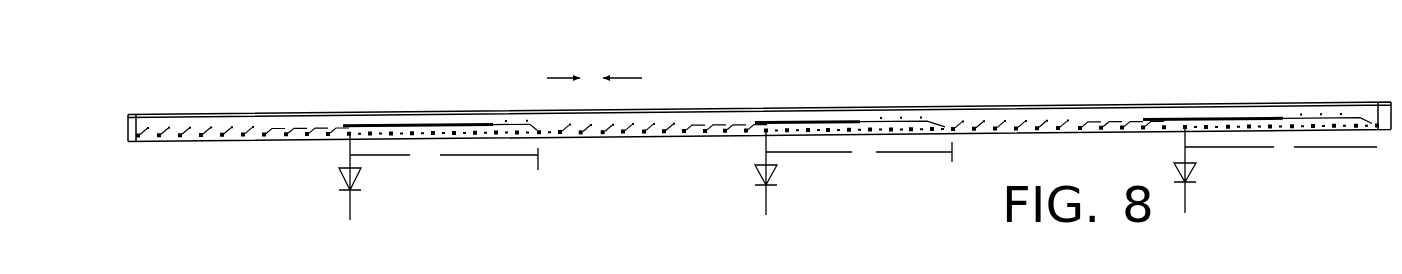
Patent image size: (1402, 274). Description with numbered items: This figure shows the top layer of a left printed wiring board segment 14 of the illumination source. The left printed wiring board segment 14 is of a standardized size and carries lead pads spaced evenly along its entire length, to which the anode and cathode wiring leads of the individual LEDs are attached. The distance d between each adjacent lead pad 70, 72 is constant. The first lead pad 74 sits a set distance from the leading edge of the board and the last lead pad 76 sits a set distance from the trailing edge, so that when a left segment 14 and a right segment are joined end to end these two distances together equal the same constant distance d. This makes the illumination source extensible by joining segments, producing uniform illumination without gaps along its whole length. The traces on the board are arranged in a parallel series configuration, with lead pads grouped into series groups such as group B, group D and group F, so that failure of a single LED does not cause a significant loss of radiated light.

The left printed wiring board segment 14 is at (992, 107).
The lead pad 70 is at (581, 67).
The lead pad 72 is at (603, 67).
The first lead pad 74 is at (137, 140).
The last lead pad 76 is at (1377, 163).